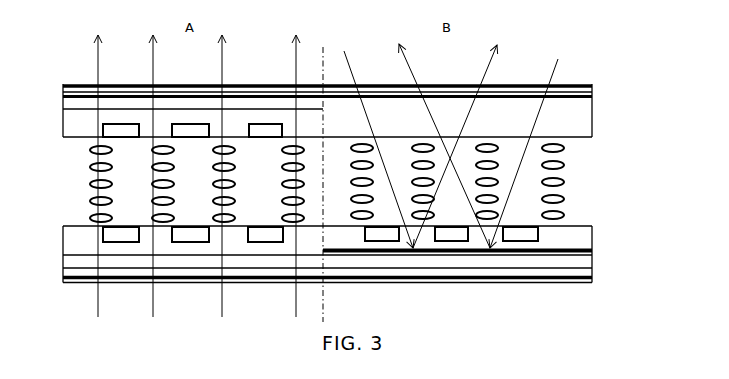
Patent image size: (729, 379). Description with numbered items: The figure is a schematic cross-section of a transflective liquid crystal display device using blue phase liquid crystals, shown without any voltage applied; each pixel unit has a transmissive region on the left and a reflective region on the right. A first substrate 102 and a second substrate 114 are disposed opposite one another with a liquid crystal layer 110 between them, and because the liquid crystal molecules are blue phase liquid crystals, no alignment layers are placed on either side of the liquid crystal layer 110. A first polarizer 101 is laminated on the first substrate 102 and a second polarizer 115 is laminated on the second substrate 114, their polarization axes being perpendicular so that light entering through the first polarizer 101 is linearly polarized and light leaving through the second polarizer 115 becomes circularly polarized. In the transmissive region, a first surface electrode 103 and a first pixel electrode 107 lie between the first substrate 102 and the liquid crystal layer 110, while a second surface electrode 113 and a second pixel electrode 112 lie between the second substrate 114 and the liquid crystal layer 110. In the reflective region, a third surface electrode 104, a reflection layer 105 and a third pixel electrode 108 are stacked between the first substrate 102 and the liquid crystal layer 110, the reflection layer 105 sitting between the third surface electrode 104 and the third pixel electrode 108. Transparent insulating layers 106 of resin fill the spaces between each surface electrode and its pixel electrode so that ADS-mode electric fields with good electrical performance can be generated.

The first polarizer 101 is at (592, 281).
The first substrate 102 is at (595, 273).
The first surface electrode 103 is at (63, 263).
The third surface electrode 104 is at (592, 263).
The reflection layer 105 is at (592, 251).
The insulating layers 106 is at (592, 108).
The first pixel electrode 107 is at (103, 233).
The third pixel electrode 108 is at (533, 235).
The liquid crystal layer 110 is at (577, 165).
The second pixel electrode 112 is at (103, 130).
The second surface electrode 113 is at (63, 102).
The second substrate 114 is at (595, 92).
The second polarizer 115 is at (595, 84).